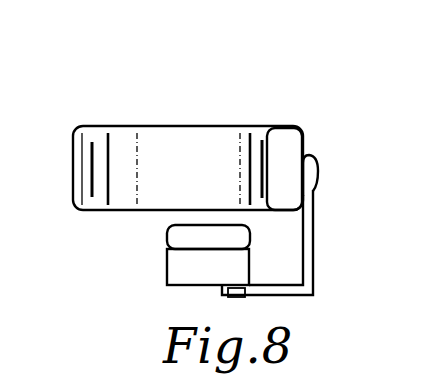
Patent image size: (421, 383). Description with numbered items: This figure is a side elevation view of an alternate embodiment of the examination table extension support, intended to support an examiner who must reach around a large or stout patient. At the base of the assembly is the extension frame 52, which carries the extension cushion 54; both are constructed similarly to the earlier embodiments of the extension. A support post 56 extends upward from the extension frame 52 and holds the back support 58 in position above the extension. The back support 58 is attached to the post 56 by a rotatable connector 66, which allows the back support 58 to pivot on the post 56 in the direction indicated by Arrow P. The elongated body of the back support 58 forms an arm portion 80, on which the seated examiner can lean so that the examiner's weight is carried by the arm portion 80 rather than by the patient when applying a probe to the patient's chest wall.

The extension frame 52 is at (170, 270).
The extension cushion 54 is at (168, 237).
The support post 56 is at (314, 250).
The back support 58 is at (273, 119).
The rotatable connector 66 is at (319, 156).
The arm portion 80 is at (97, 131).
The Arrow P is at (374, 143).